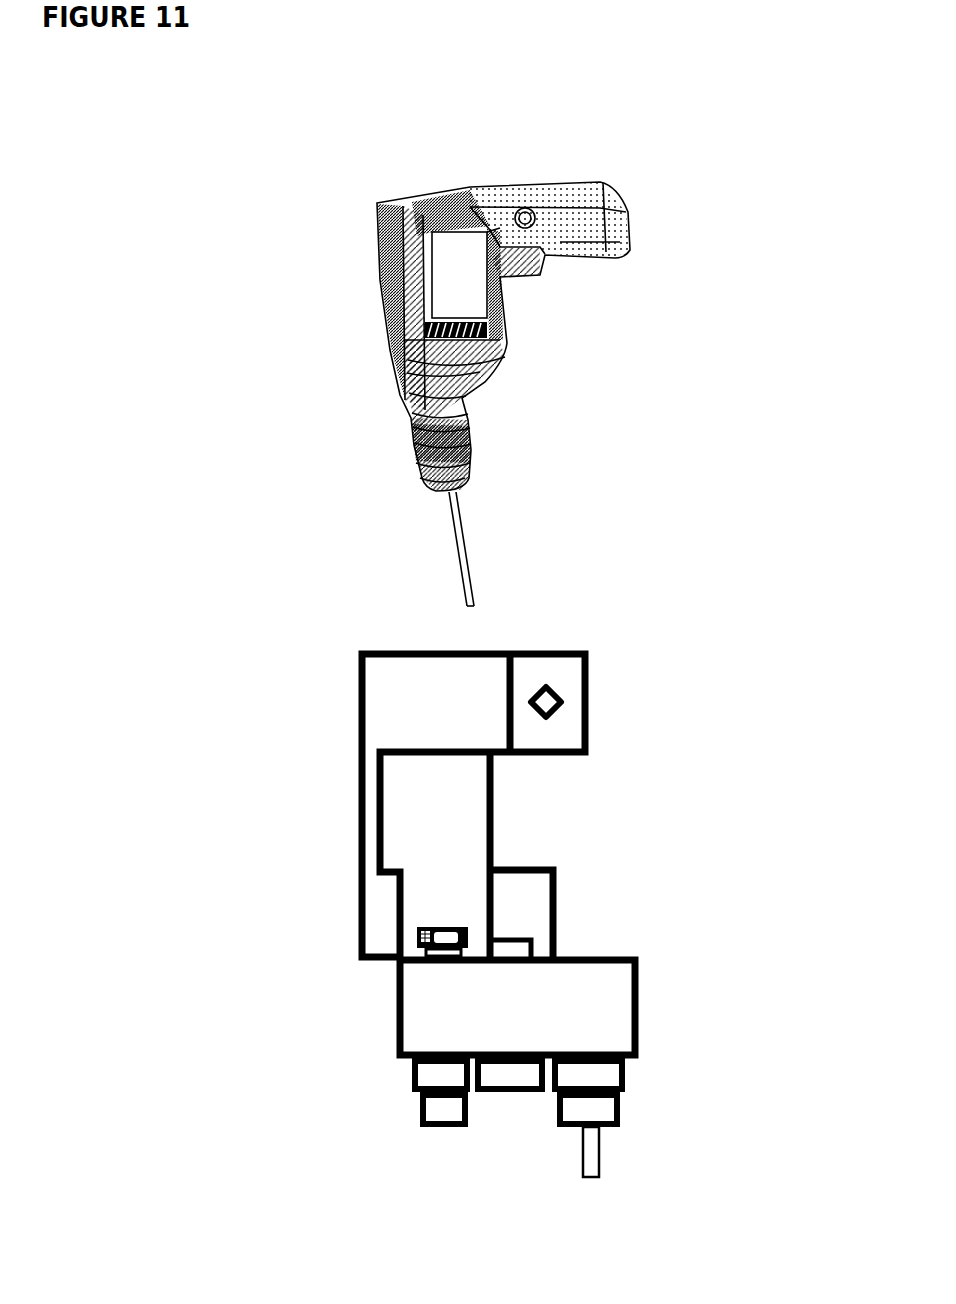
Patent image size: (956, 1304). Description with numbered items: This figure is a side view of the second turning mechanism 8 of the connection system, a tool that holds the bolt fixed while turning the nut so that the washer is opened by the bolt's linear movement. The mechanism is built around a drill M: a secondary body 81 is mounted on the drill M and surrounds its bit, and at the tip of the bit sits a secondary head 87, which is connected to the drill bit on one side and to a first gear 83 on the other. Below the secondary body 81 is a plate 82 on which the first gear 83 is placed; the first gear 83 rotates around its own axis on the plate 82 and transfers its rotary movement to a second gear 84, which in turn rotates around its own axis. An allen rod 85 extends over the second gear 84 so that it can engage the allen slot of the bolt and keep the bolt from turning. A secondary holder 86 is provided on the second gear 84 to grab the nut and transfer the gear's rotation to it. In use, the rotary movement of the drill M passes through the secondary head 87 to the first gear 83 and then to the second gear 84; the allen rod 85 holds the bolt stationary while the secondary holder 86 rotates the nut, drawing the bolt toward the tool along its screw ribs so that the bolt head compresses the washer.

The second turning mechanism 8 is at (160, 302).
The drill M is at (422, 348).
The secondary body 81 is at (390, 687).
The secondary head 87 is at (425, 910).
The plate 82 is at (417, 1005).
The first gear 83 is at (443, 1077).
The second gear 84 is at (603, 1072).
The allen rod 85 is at (592, 1167).
The secondary holder 86 is at (583, 1111).